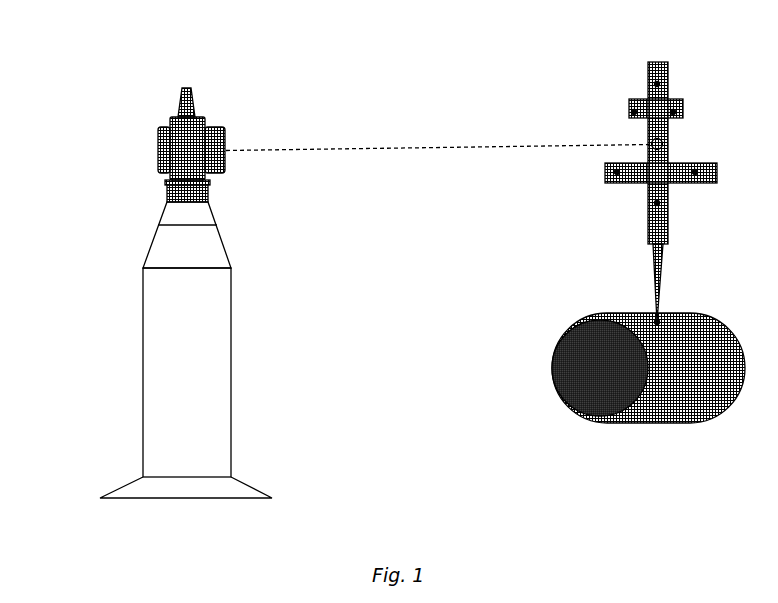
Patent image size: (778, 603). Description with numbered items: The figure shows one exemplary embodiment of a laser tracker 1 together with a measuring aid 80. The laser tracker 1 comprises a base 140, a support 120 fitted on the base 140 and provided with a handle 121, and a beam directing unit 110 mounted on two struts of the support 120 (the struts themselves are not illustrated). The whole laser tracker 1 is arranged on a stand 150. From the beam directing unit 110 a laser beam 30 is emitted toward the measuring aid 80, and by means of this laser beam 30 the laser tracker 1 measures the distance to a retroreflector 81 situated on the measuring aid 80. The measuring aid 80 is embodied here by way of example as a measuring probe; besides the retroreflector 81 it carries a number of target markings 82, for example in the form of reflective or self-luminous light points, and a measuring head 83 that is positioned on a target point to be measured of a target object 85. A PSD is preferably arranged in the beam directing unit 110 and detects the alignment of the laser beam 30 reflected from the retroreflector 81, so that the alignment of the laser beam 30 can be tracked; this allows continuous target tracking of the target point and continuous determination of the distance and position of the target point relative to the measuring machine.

The laser tracker 1 is at (151, 76).
The beam directing unit 110 is at (160, 127).
The support 120 is at (193, 130).
The handle 121 is at (189, 88).
The base 140 is at (165, 185).
The stand 150 is at (130, 248).
The laser beam 30 is at (442, 148).
The measuring aid 80 is at (633, 55).
The retroreflector 81 is at (663, 144).
The target markings 82 is at (657, 84).
The measuring head 83 is at (658, 320).
The target object 85 is at (550, 298).